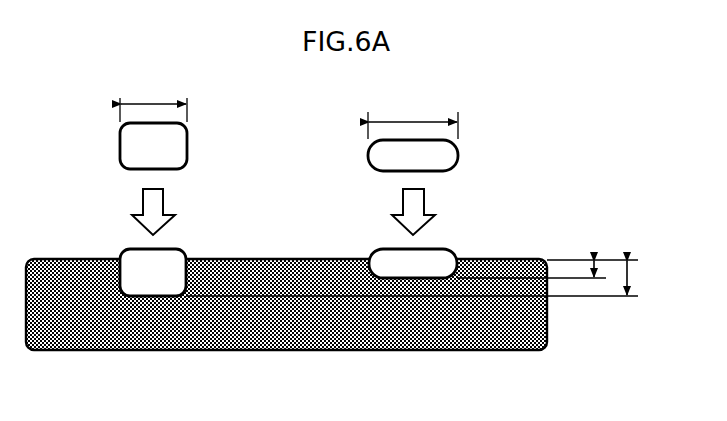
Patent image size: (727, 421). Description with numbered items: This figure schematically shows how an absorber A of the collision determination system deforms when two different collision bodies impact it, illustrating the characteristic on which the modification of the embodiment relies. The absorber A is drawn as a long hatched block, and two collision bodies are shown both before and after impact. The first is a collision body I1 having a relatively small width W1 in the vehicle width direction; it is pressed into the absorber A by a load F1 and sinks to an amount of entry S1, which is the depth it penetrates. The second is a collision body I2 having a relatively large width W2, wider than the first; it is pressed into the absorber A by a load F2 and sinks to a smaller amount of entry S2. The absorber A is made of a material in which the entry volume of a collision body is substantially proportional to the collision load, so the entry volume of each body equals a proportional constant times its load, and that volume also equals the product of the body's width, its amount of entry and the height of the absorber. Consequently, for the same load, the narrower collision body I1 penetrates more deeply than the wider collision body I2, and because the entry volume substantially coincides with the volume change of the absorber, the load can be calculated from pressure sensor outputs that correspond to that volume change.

The absorber A is at (336, 339).
The collision body I1 is at (188, 145).
The collision body I2 is at (459, 150).
The width of collision body W1 is at (153, 103).
The width of collision body W2 is at (413, 119).
The load F1 is at (203, 212).
The load F2 is at (463, 212).
The amount of entry S1 is at (659, 310).
The amount of entry S2 is at (596, 270).